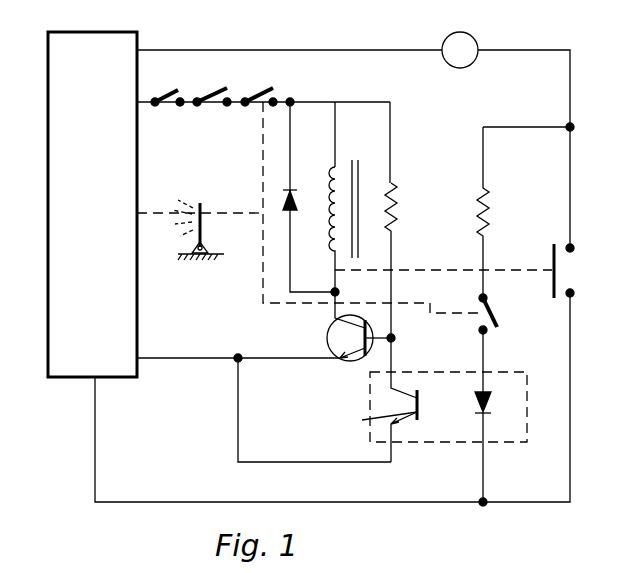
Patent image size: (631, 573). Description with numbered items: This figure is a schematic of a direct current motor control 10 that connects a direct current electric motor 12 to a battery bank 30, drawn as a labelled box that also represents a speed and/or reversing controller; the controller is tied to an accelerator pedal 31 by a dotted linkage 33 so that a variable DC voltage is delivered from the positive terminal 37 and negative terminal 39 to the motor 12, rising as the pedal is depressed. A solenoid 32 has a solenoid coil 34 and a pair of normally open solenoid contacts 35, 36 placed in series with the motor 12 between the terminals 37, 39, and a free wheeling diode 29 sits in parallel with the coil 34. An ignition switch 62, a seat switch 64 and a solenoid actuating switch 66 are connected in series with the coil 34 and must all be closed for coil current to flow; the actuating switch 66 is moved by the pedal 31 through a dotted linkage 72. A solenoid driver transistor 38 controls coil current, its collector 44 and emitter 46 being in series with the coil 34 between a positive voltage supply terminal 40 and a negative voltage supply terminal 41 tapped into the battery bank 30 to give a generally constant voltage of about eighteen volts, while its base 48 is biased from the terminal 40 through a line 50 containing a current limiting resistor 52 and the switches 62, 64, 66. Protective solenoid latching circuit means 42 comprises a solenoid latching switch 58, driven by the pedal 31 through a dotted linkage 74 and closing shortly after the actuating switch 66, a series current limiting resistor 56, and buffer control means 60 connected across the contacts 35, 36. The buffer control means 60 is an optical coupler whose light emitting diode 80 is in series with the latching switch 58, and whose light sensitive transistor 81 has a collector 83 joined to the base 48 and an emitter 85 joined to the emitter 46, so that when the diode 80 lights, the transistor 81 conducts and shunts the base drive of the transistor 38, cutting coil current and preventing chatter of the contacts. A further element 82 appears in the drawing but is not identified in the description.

The direct current motor control 10 is at (513, 42).
The direct current electric motor 12 is at (446, 40).
The free wheeling diode 29 is at (295, 188).
The battery bank 30 is at (140, 300).
The accelerator pedal 31 is at (203, 200).
The solenoid 32 is at (365, 245).
The linkage 33 is at (150, 210).
The solenoid coil 34 is at (342, 165).
The solenoid contact 35 is at (565, 246).
The solenoid contact 36 is at (565, 298).
The positive terminal 37 is at (140, 48).
The solenoid driver transistor 38 is at (360, 351).
The negative terminal 39 is at (99, 380).
The positive voltage supply terminal 40 is at (263, 97).
The negative voltage supply terminal 41 is at (142, 362).
The protective solenoid latching circuit means 42 is at (416, 306).
The collector 44 is at (340, 330).
The emitter 46 is at (336, 355).
The base 48 is at (397, 338).
The line 50 is at (392, 110).
The current limiting resistor 52 is at (398, 194).
The current limiting resistor 56 is at (490, 200).
The solenoid latching switch 58 is at (498, 330).
The buffer control means 60 is at (500, 442).
The ignition switch 62 is at (172, 106).
The seat switch 64 is at (214, 92).
The solenoid actuating switch 66 is at (250, 106).
The linkage 72 is at (262, 192).
The linkage 74 is at (262, 305).
The light emitting diode 80 is at (490, 400).
The light sensitive transistor 81 is at (414, 428).
The collector 82 is at (420, 408).
The collector 83 is at (393, 403).
The emitter 85 is at (376, 413).